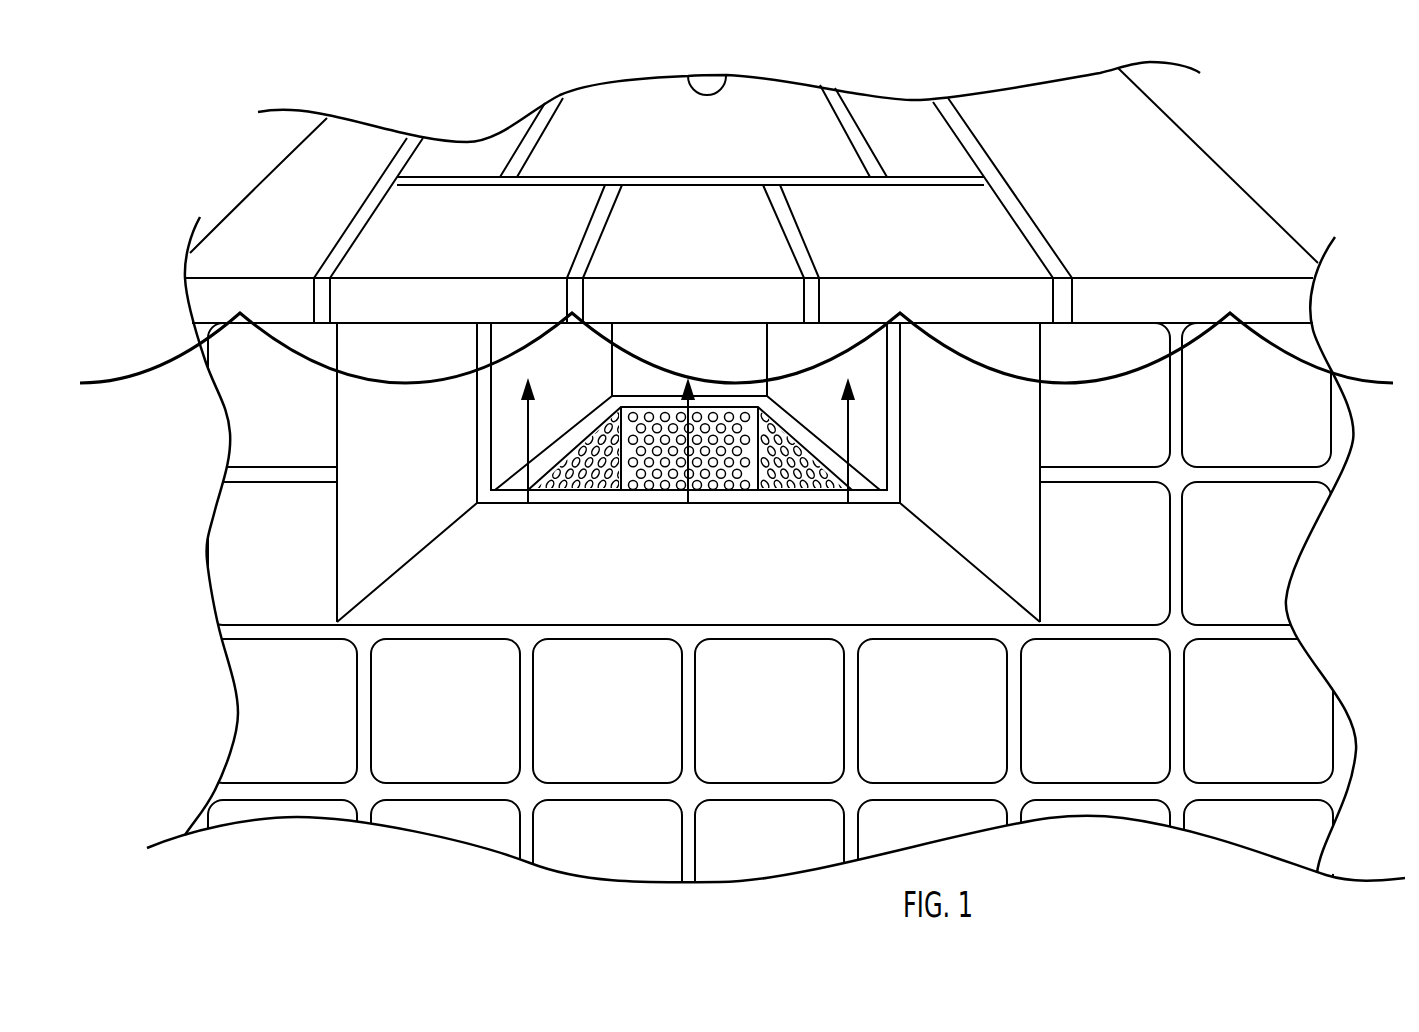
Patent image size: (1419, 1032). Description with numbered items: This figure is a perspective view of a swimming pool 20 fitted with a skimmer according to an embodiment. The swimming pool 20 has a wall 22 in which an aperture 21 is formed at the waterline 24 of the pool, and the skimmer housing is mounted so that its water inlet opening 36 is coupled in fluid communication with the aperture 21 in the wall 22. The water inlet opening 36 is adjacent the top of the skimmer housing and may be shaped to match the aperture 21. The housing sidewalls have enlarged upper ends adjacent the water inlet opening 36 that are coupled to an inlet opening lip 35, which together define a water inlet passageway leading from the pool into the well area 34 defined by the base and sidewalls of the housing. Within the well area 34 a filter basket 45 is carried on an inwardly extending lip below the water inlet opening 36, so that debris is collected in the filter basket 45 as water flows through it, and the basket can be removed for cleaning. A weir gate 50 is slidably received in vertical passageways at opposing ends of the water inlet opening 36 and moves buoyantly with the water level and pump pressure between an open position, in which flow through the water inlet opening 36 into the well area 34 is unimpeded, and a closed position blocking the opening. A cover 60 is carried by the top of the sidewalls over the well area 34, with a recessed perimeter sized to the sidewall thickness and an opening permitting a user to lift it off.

The swimming pool 20 is at (245, 517).
The aperture 21 is at (337, 535).
The wall 22 is at (281, 684).
The waterline 24 is at (238, 318).
The well area 34 is at (690, 447).
The inlet opening lip 35 is at (658, 555).
The water inlet opening 36 is at (737, 465).
The filter basket 45 is at (738, 381).
The weir gate 50 is at (554, 520).
The cover 60 is at (648, 108).